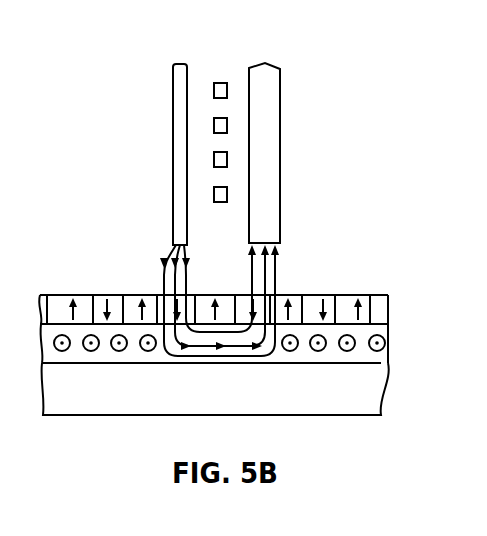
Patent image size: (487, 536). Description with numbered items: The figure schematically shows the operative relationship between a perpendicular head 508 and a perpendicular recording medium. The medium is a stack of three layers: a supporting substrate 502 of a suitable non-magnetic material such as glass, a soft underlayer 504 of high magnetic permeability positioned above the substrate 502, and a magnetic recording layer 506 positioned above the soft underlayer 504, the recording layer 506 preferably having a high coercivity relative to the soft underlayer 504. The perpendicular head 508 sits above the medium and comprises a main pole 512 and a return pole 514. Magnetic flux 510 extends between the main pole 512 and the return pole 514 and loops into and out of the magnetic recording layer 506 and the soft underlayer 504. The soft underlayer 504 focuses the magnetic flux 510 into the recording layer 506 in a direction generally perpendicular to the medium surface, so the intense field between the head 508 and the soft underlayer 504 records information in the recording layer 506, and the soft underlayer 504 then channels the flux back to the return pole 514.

The supporting substrate 502 is at (129, 388).
The soft underlayer 504 is at (385, 330).
The magnetic recording layer 506 is at (385, 300).
The perpendicular head 508 is at (178, 46).
The magnetic flux 510 is at (282, 283).
The main pole 512 is at (180, 146).
The return pole 514 is at (275, 147).